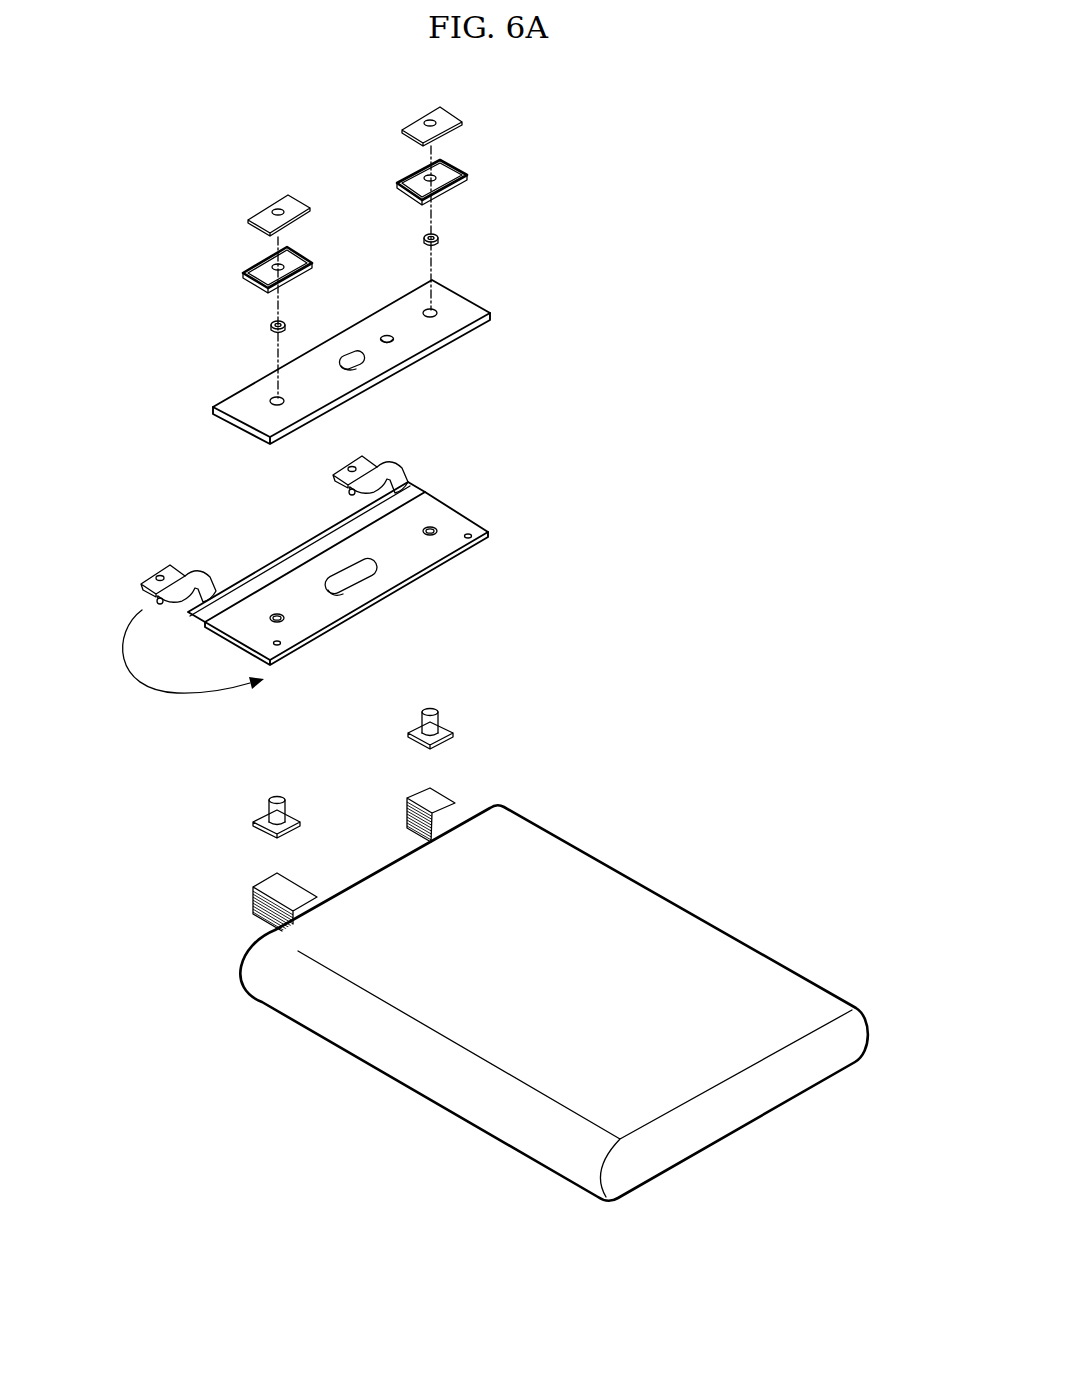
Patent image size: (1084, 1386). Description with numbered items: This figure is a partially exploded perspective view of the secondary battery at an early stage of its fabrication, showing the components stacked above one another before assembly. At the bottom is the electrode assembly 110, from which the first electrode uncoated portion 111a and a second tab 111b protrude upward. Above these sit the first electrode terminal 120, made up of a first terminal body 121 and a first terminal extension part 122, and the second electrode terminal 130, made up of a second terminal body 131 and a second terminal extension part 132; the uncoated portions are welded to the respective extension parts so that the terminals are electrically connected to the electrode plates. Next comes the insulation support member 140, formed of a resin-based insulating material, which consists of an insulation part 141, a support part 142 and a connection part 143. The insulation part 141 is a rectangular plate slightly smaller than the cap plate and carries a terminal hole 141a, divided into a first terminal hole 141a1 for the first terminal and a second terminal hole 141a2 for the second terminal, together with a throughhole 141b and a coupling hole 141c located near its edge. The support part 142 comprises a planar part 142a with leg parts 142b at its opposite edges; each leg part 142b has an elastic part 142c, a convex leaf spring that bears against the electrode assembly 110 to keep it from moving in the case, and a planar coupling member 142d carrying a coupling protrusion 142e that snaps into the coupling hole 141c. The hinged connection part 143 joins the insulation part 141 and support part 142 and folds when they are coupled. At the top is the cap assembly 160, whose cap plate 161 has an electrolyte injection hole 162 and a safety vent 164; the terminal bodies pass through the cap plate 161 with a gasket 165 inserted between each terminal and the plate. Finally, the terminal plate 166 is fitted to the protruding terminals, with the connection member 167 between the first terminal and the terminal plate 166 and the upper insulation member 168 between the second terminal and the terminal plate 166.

The electrode assembly 110 is at (461, 1106).
The first electrode uncoated portion 111a is at (293, 890).
The second electrode tab 111b is at (448, 803).
The first electrode terminal 120 is at (186, 793).
The first terminal body 121 is at (263, 803).
The first terminal extension part 122 is at (253, 823).
The second electrode terminal 130 is at (517, 683).
The second terminal body 131 is at (438, 715).
The second terminal extension part 132 is at (451, 728).
The insulation support member 140 is at (520, 532).
The insulation part 141 is at (457, 521).
The terminal hole 141a is at (468, 630).
The first terminal hole 141a1 is at (280, 623).
The second terminal hole 141a2 is at (430, 537).
The throughhole 141b is at (350, 572).
The coupling hole 141c is at (468, 540).
The support part 142 is at (508, 413).
The planar part 142a is at (412, 488).
The leg part 142b is at (450, 437).
The elastic part 142c is at (399, 474).
The coupling member 142d is at (357, 462).
The coupling protrusion 142e is at (349, 492).
The connection part 143 is at (433, 497).
The cap assembly 160 is at (511, 313).
The cap plate 161 is at (458, 310).
The electrolyte injection hole 162 is at (392, 337).
The safety vent 164 is at (350, 358).
The gasket 165 is at (270, 326).
The terminal plate 166 is at (262, 208).
The connection member 167 is at (258, 264).
The upper insulation member 168 is at (448, 173).